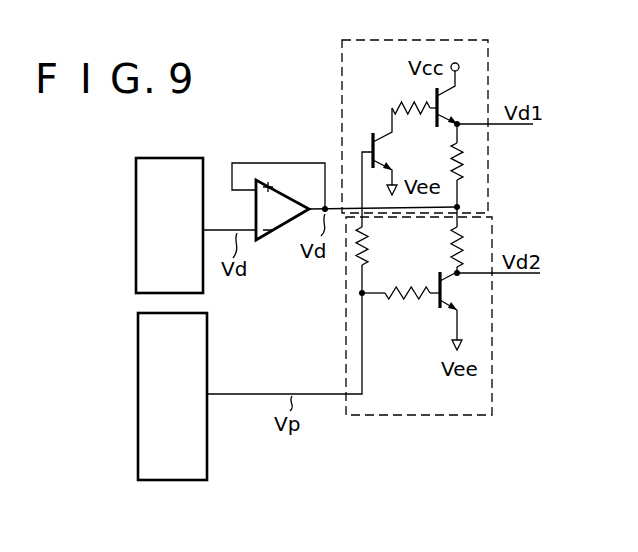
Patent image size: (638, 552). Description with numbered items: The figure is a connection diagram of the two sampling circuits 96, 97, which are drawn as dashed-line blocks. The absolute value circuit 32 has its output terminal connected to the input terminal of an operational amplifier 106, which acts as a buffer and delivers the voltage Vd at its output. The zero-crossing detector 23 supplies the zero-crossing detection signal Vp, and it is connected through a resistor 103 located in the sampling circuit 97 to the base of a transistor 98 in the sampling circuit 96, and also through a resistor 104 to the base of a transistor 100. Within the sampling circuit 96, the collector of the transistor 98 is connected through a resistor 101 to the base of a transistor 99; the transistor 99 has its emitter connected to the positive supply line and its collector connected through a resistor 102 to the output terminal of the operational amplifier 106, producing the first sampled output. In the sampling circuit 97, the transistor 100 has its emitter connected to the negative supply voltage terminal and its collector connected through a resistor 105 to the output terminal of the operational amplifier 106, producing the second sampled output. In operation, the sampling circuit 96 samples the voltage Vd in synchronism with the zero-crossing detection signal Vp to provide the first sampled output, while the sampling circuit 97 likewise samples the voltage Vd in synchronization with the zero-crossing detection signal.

The absolute value circuit 32 is at (170, 158).
The operational amplifier 106 is at (279, 186).
The sampling circuit 96 is at (488, 42).
The sampling circuit 97 is at (430, 415).
The transistor 98 is at (370, 134).
The transistor 99 is at (455, 100).
The transistor 100 is at (446, 273).
The resistor 101 is at (402, 104).
The resistor 102 is at (464, 160).
The resistor 103 is at (373, 247).
The resistor 104 is at (403, 303).
The resistor 105 is at (463, 247).
The zero-crossing detector 23 is at (207, 446).